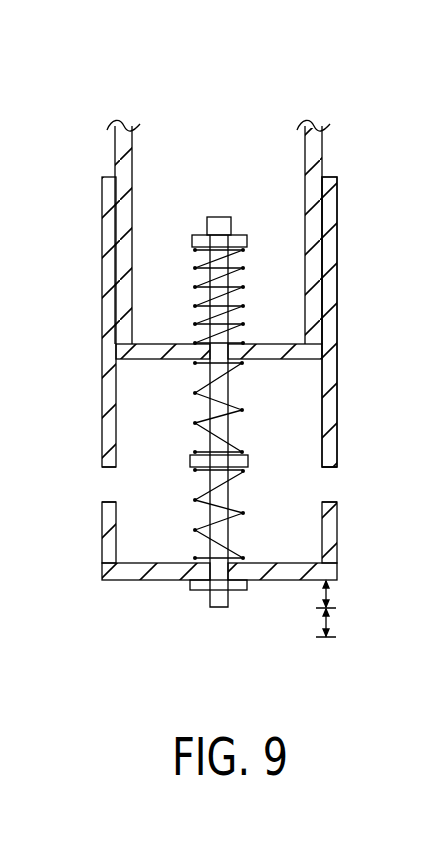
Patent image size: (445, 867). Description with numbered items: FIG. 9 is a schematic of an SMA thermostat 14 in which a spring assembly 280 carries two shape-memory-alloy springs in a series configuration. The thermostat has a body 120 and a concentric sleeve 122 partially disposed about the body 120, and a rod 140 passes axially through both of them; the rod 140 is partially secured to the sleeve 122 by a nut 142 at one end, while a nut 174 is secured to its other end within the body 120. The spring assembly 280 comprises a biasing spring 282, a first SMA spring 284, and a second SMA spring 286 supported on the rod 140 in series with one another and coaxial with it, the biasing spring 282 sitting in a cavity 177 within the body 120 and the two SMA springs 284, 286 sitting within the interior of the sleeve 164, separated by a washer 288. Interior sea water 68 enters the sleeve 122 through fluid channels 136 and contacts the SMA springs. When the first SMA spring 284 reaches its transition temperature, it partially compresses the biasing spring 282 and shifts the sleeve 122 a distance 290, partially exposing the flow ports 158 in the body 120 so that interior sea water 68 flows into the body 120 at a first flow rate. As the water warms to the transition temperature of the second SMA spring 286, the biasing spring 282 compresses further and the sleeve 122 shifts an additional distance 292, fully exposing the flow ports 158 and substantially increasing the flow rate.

The SMA thermostat 14 is at (124, 94).
The interior sea water 68 is at (407, 322).
The body 120 is at (322, 163).
The sleeve 122 is at (330, 417).
The fluid channels 136 is at (103, 483).
The rod 140 is at (224, 596).
The nut 142 is at (197, 591).
The flow ports 158 is at (122, 246).
The interior of the sleeve 164 is at (140, 540).
The nut 174 is at (199, 237).
The cavity 177 is at (297, 442).
The spring assembly 280 is at (258, 278).
The biasing spring 282 is at (196, 304).
The first SMA spring 284 is at (243, 410).
The second SMA spring 286 is at (248, 512).
The washer 288 is at (192, 458).
The distance 290 is at (330, 600).
The additional distance 292 is at (332, 625).